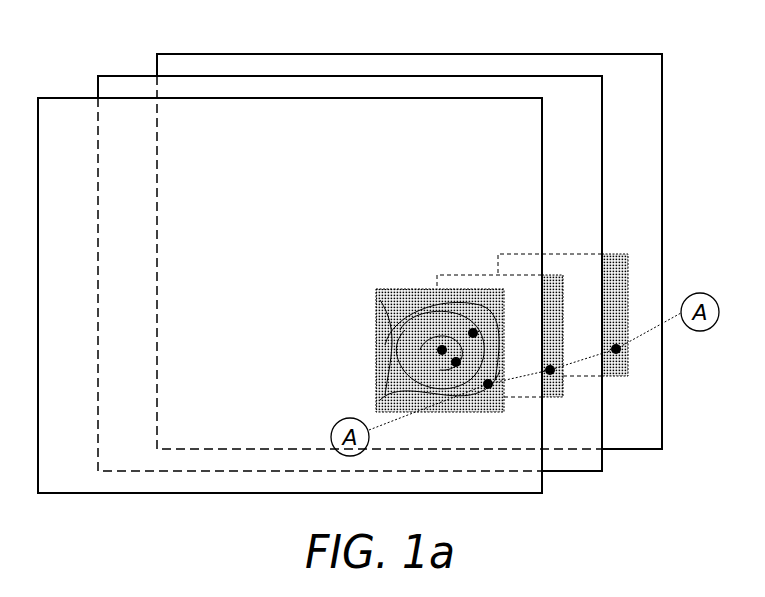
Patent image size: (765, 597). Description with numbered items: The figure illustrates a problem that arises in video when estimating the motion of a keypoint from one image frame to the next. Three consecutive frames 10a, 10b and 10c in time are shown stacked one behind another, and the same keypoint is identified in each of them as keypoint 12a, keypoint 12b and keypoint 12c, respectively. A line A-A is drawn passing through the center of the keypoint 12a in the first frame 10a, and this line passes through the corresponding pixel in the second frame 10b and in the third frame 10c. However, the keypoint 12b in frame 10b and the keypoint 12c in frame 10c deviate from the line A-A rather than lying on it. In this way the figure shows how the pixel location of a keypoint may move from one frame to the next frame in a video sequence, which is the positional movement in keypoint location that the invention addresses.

The first frame 10a is at (63, 98).
The second frame 10b is at (122, 76).
The third frame 10c is at (183, 54).
The keypoint 12a is at (490, 389).
The keypoint 12b is at (550, 374).
The keypoint 12c is at (616, 353).